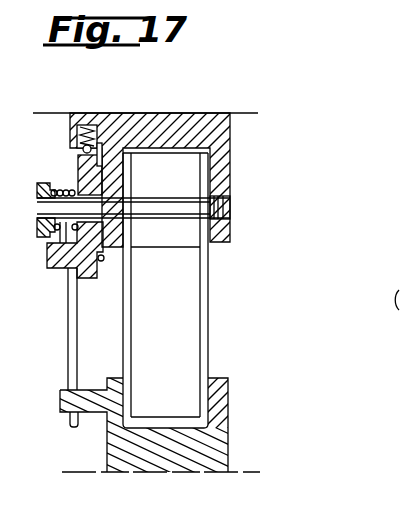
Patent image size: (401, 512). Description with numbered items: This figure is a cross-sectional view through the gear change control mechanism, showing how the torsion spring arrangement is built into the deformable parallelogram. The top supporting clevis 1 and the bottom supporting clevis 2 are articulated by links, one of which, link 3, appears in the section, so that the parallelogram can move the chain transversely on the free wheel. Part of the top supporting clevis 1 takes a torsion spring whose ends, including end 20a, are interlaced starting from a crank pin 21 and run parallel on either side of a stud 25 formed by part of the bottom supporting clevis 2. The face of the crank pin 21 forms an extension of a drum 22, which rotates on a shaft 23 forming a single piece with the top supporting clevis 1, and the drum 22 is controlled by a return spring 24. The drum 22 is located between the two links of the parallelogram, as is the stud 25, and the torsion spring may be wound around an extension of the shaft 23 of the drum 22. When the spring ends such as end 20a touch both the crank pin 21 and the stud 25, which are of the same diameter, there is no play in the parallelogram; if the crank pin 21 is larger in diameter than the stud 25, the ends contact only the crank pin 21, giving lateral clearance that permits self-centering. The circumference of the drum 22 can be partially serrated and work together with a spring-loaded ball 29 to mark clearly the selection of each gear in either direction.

The top supporting clevis 1 is at (218, 128).
The bottom supporting clevis 2 is at (220, 428).
The link 3 is at (185, 350).
The end of torsion spring 20a is at (68, 380).
The crank pin 21 is at (53, 270).
The drum 22 is at (78, 173).
The shaft 23 is at (228, 204).
The return spring 24 is at (72, 231).
The stud 25 is at (58, 412).
The ball 29 is at (73, 148).